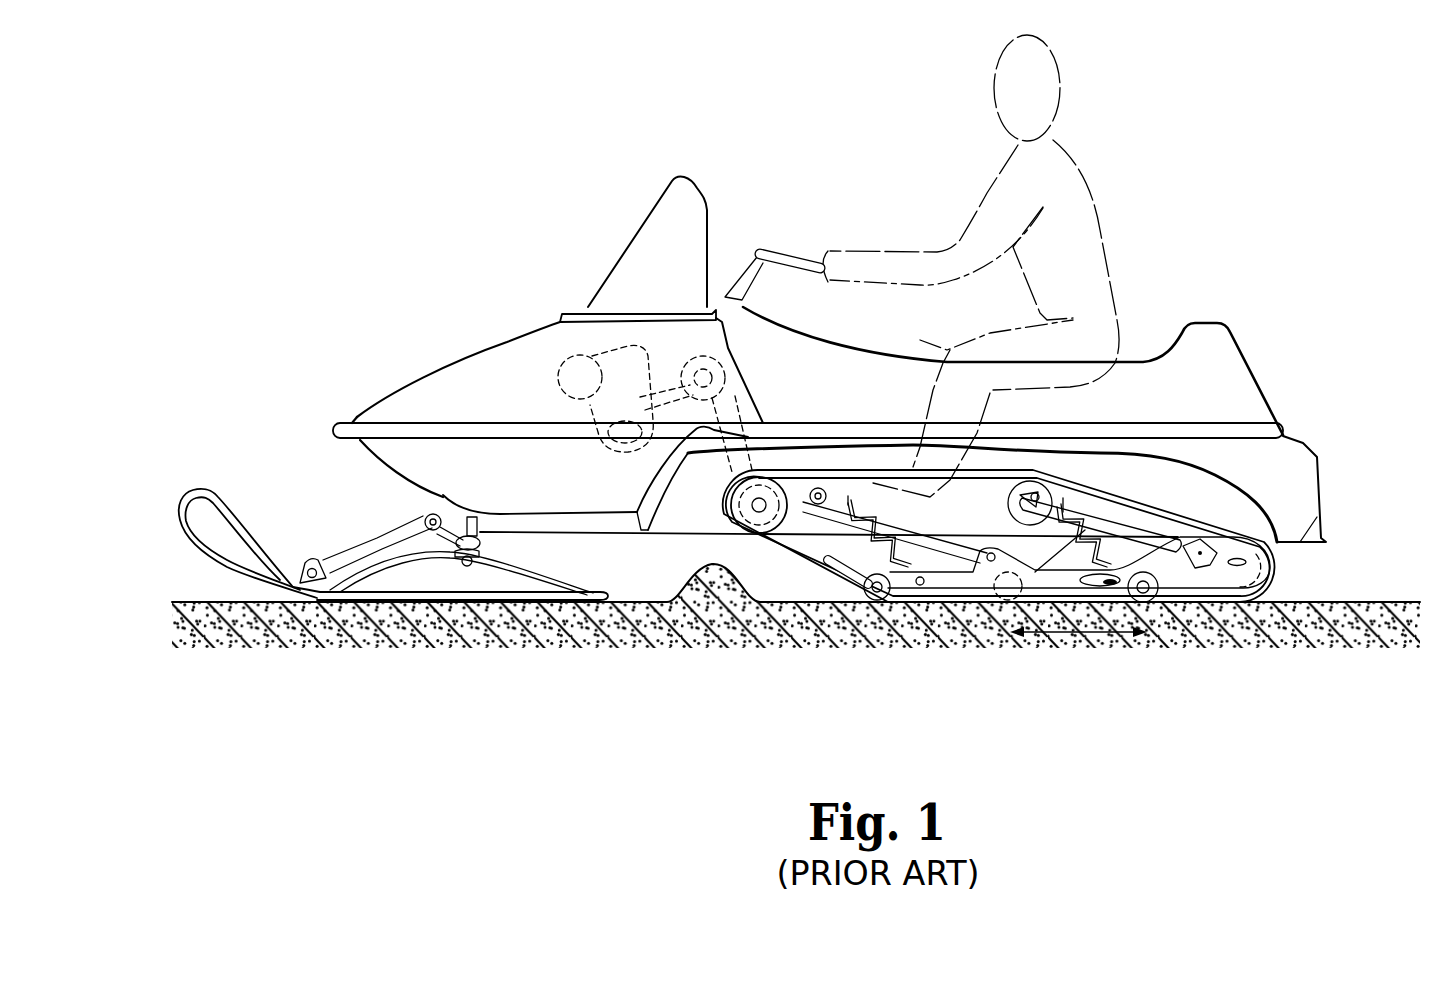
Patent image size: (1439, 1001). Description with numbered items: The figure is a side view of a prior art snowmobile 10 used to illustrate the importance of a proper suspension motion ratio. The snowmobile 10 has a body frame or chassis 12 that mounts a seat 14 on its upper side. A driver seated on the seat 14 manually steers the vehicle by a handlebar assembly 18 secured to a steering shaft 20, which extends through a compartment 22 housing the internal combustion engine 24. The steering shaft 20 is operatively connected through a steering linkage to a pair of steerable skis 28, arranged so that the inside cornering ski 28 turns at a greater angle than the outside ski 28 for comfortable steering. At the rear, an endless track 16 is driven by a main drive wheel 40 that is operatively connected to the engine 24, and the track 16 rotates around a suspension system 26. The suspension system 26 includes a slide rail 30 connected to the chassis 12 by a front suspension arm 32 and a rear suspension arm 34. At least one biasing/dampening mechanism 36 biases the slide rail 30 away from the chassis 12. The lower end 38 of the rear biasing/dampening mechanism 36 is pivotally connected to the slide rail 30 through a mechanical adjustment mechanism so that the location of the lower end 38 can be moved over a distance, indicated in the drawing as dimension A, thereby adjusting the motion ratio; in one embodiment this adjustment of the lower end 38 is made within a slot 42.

The snowmobile 10 is at (415, 355).
The body frame or chassis 12 is at (1303, 445).
The seat 14 is at (1207, 320).
The endless track 16 is at (808, 598).
The handlebar assembly 18 is at (795, 248).
The steering shaft 20 is at (742, 280).
The compartment 22 is at (505, 340).
The internal combustion engine 24 is at (596, 430).
The suspension system 26 is at (662, 533).
The steerable skis 28 is at (203, 488).
The slide rail 30 is at (950, 578).
The front suspension arm 32 is at (815, 510).
The rear suspension arm 34 is at (1150, 512).
The biasing/dampening mechanism 36 is at (1003, 600).
The lower end 38 is at (1162, 598).
The main drive wheel 40 is at (734, 514).
The slot 42 is at (1092, 595).
The travel distance A is at (1088, 640).